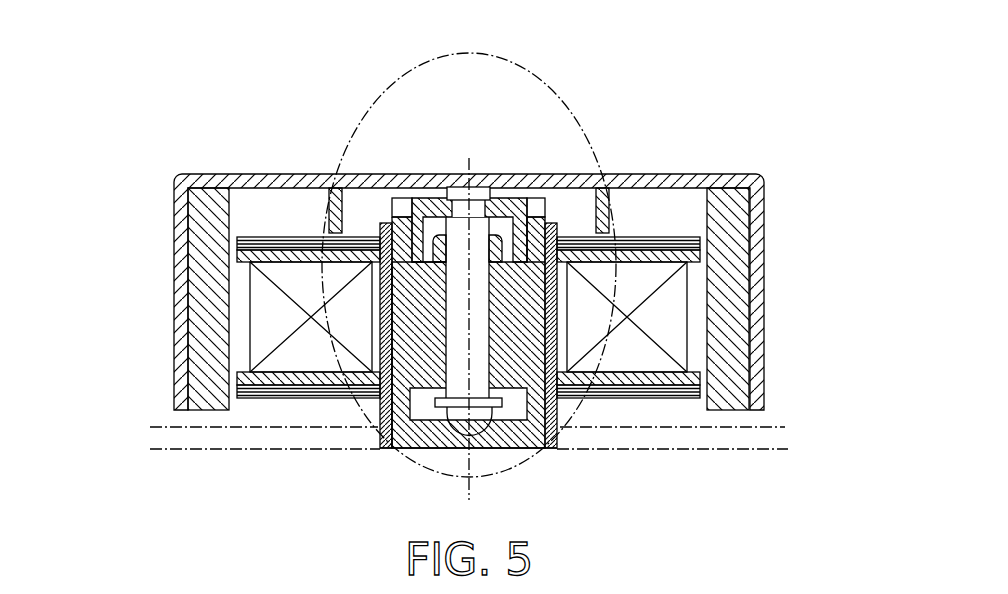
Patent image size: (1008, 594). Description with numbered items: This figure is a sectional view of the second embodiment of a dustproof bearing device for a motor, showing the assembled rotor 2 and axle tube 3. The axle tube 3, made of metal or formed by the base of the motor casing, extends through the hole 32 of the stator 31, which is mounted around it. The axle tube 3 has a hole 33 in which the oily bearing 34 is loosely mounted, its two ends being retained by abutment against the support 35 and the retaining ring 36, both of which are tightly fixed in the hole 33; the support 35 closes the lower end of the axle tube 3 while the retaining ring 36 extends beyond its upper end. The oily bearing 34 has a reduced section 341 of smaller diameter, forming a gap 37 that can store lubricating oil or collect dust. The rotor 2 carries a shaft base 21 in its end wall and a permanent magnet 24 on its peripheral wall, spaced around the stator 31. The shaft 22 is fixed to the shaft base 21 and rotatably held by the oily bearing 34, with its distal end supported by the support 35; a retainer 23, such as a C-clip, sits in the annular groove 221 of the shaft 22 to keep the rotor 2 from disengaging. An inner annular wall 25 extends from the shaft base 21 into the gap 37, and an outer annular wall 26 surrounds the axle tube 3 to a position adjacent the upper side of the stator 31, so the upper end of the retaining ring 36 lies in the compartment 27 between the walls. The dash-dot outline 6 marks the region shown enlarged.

The rotor 2 is at (176, 243).
The axle tube 3 is at (556, 430).
The enlarged portion 6 is at (397, 80).
The shaft base 21 is at (423, 202).
The shaft 22 is at (477, 233).
The retainer 23 is at (447, 407).
The permanent magnet 24 is at (740, 353).
The inner annular wall 25 is at (563, 263).
The outer annular wall 26 is at (590, 220).
The compartment 27 is at (560, 203).
The stator 31 is at (262, 243).
The hole 32 is at (377, 407).
The hole 33 is at (327, 190).
The oily bearing 34 is at (380, 320).
The support 35 is at (483, 438).
The retaining ring 36 is at (375, 196).
The gap 37 is at (413, 268).
The annular groove 221 is at (447, 407).
The reduced section 341 is at (407, 323).